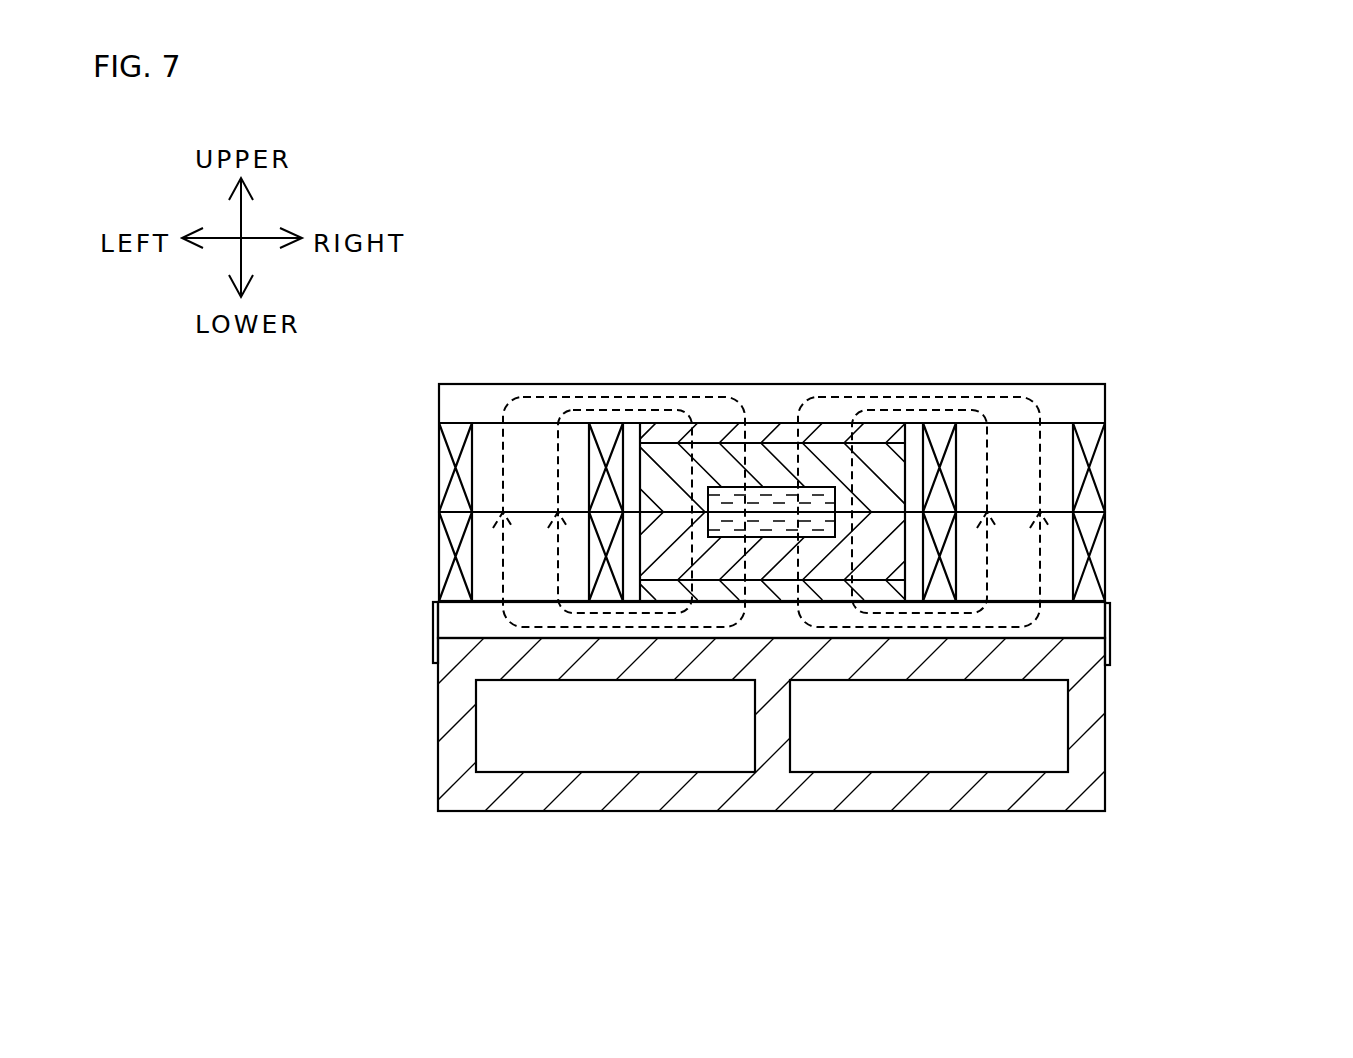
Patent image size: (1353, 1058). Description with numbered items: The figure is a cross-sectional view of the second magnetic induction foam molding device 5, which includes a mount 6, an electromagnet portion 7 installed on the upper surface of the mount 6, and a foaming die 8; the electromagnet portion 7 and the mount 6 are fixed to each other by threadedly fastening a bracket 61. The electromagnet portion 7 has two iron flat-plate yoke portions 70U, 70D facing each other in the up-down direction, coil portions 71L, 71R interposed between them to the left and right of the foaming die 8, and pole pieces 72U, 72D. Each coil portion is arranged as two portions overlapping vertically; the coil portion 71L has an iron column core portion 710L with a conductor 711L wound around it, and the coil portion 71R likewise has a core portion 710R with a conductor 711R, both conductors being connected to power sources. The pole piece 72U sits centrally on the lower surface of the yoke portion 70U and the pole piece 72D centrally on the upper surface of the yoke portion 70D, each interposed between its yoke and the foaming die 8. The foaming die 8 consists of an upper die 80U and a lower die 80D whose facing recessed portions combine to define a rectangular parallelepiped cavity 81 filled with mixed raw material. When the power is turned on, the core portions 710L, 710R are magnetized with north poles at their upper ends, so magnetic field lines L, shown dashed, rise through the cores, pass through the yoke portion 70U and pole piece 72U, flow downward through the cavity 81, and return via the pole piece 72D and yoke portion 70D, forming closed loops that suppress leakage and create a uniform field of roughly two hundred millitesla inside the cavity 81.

The second magnetic induction foam molding device 5 is at (1122, 297).
The mount 6 is at (950, 798).
The bracket 61 is at (1110, 648).
The electromagnet portion 7 is at (528, 359).
The yoke portion 70U is at (1090, 400).
The yoke portion 70D is at (1080, 623).
The coil portion 71L is at (438, 497).
The coil portion 71R is at (1107, 497).
The core portion 710L is at (490, 457).
The core portion 710R is at (1057, 455).
The conductor 711L is at (443, 447).
The conductor 711R is at (1098, 452).
The pole piece 72U is at (718, 423).
The pole piece 72D is at (714, 590).
The foaming die 8 is at (772, 512).
The upper die 80U is at (820, 440).
The lower die 80D is at (832, 572).
The cavity 81 is at (790, 491).
The magnetic field lines L is at (1000, 397).